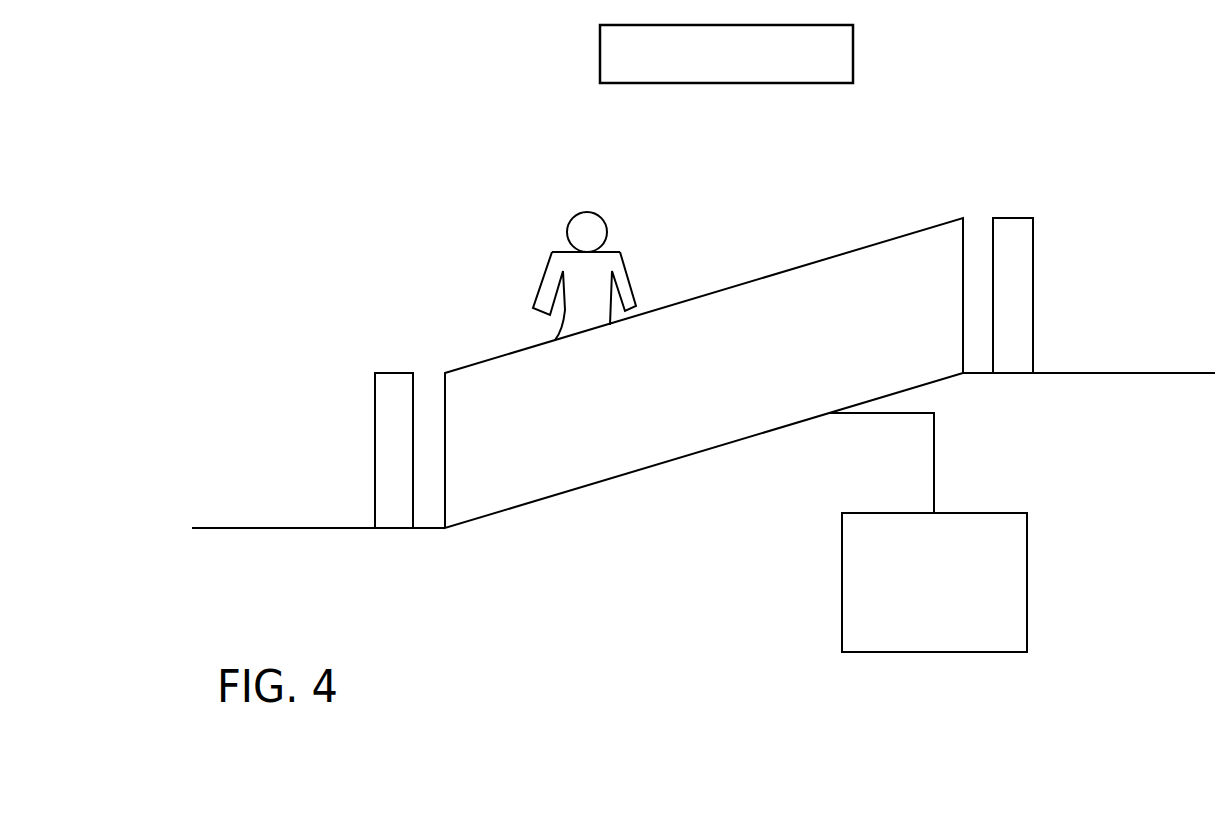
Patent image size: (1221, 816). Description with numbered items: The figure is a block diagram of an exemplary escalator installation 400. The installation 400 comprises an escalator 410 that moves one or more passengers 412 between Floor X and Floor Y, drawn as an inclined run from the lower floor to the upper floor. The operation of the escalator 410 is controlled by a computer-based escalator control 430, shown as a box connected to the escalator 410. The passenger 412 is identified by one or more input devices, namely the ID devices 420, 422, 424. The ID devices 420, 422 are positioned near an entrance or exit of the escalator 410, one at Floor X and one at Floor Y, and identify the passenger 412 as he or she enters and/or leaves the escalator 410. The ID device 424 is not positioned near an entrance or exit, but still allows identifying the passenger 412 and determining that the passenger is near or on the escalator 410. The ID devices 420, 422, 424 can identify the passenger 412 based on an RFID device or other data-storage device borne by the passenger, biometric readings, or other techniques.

The escalator installation 400 is at (335, 159).
The escalator 410 is at (704, 373).
The passenger 412 is at (623, 258).
The ID device 420 is at (374, 372).
The ID device 422 is at (1034, 218).
The ID device 424 is at (726, 54).
The escalator control 430 is at (934, 582).